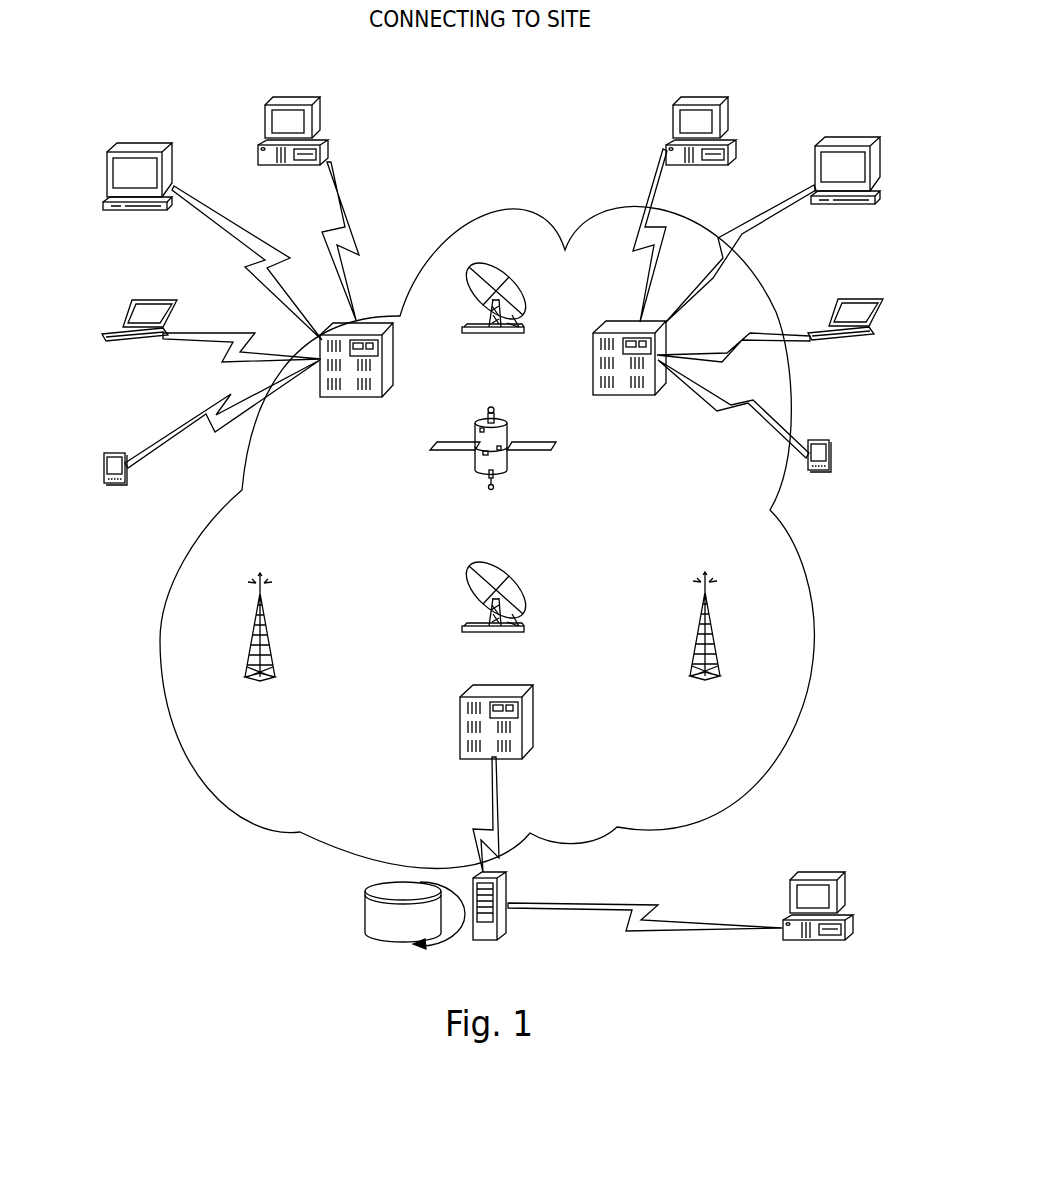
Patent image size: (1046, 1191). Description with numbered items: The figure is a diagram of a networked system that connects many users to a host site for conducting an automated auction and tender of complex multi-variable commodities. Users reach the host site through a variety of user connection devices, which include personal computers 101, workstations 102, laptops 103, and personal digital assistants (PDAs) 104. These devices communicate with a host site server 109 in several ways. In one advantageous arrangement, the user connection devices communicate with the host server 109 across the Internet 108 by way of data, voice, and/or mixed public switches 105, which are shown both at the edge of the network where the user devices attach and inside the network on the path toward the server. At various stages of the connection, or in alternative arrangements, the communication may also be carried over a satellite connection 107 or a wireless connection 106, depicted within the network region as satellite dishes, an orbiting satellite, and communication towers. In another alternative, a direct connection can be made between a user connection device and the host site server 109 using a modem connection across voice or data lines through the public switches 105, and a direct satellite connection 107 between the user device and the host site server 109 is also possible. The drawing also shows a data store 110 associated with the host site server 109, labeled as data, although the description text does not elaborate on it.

The personal computer 101 is at (272, 100).
The workstation 102 is at (138, 143).
The laptop 103 is at (141, 300).
The personal digital assistant (PDA) 104 is at (112, 452).
The public switch 105 is at (393, 366).
The wireless connection 106 is at (272, 633).
The satellite connection 107 is at (513, 296).
The Internet 108 is at (209, 513).
The host site server 109 is at (506, 887).
The data store 110 is at (365, 913).